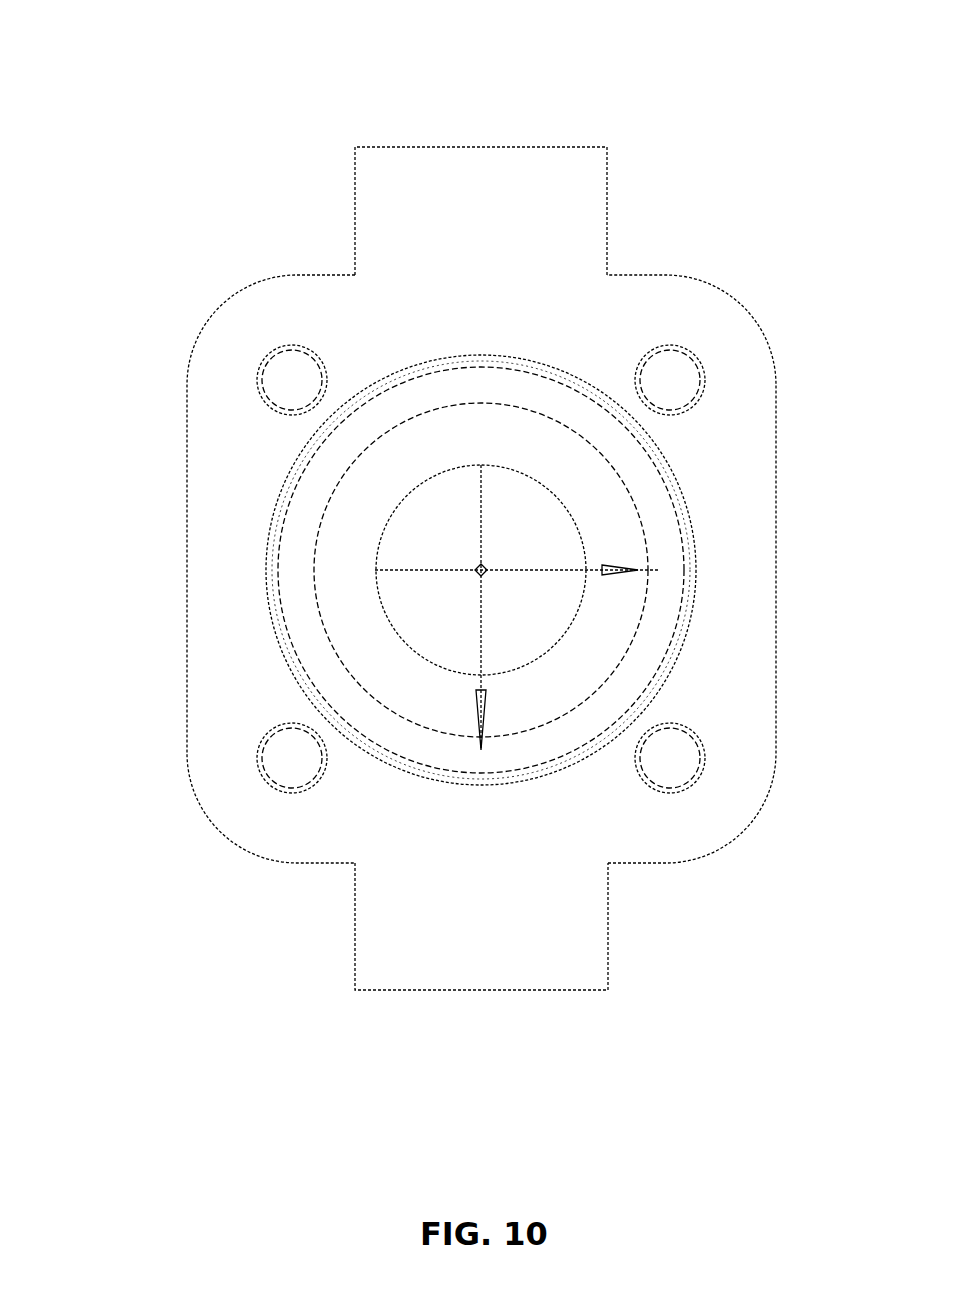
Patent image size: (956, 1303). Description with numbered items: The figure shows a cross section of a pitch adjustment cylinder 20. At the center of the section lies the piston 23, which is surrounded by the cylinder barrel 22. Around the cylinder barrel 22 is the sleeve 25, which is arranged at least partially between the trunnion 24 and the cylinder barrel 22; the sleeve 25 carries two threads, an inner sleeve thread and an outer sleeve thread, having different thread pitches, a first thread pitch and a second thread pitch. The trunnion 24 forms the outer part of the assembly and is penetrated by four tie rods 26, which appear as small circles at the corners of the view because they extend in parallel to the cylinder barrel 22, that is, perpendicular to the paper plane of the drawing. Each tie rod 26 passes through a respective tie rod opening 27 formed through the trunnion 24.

The pitch adjustment cylinder 20 is at (100, 103).
The cylinder barrel 22 is at (653, 643).
The piston 23 is at (451, 551).
The trunnion 24 is at (416, 204).
The sleeve 25 is at (688, 584).
The tie rod 26 is at (677, 380).
The tie rod opening 27 is at (677, 413).